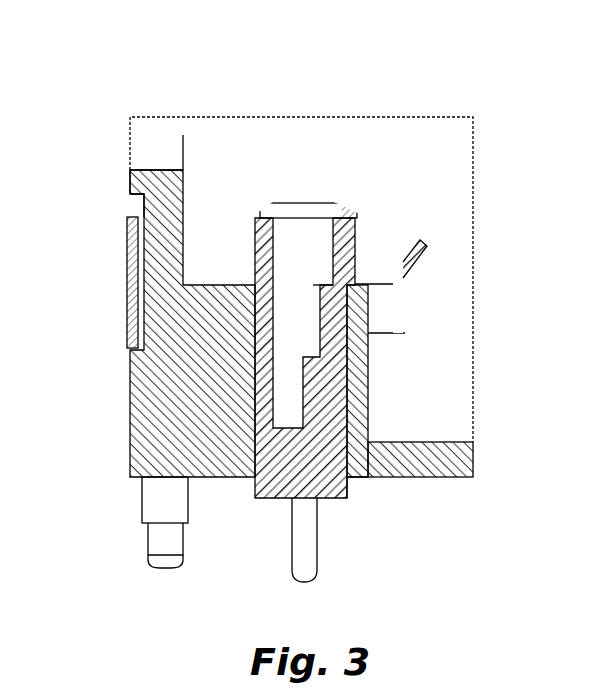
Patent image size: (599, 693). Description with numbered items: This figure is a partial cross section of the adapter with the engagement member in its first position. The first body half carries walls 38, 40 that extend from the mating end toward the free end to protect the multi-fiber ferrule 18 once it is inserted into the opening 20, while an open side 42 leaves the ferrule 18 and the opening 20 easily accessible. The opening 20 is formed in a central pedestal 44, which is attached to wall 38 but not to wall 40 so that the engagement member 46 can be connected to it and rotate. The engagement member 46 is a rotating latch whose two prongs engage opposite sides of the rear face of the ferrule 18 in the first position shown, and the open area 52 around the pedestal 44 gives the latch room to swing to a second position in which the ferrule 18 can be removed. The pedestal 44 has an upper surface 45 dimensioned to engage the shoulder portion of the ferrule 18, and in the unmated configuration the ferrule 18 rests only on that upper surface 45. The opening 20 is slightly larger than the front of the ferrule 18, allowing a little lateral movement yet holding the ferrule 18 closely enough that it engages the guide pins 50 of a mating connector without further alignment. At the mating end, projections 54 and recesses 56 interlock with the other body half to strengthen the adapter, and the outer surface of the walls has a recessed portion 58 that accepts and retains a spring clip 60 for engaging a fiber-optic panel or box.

The multi-fiber ferrule 18 is at (266, 500).
The opening 20 is at (352, 480).
The wall 38 is at (133, 182).
The wall 40 is at (408, 128).
The open side 42 is at (465, 380).
The central pedestal 44 is at (370, 403).
The upper surface 45 is at (372, 298).
The engagement member 46 is at (392, 212).
The guide pins 50 is at (318, 560).
The open area 52 is at (402, 357).
The projections 54 is at (142, 512).
The recesses 56 is at (131, 412).
The recessed portion 58 is at (145, 209).
The spring clip 60 is at (130, 294).